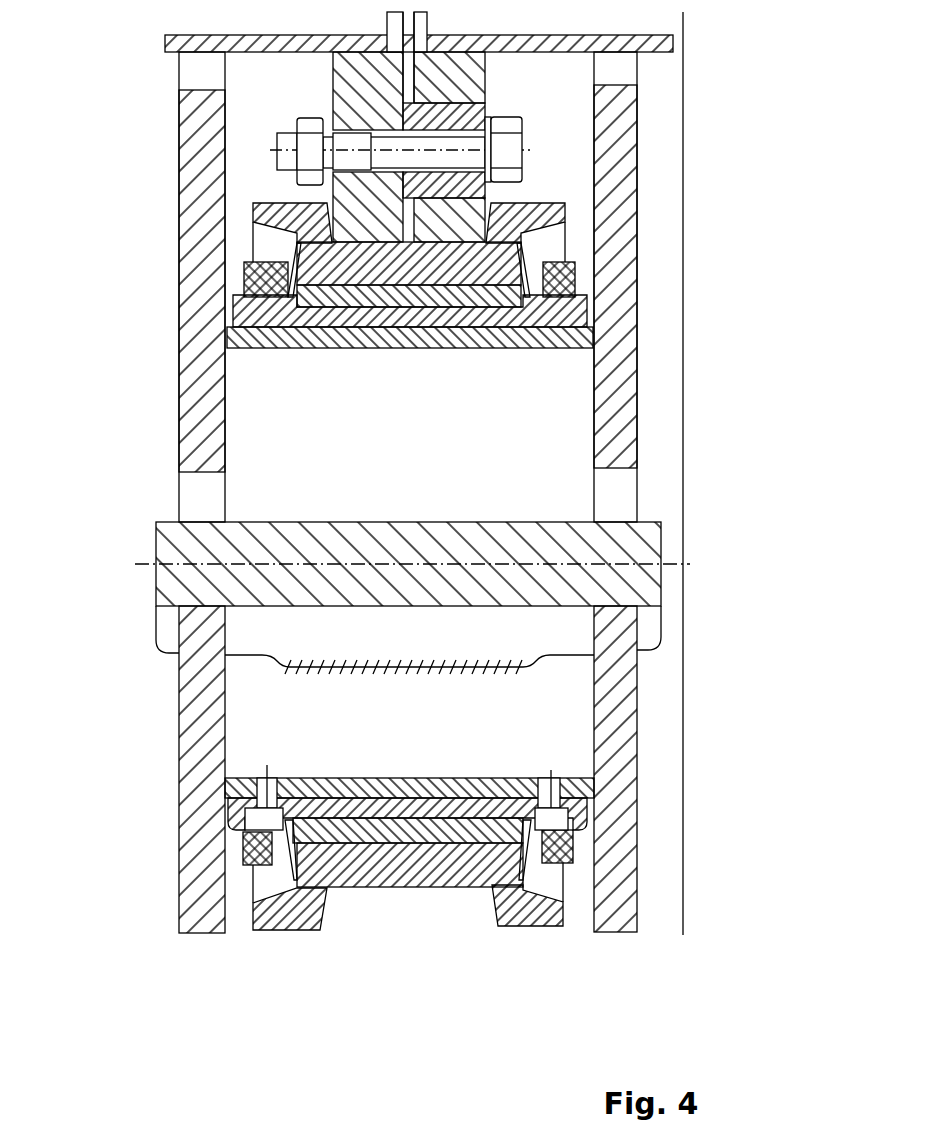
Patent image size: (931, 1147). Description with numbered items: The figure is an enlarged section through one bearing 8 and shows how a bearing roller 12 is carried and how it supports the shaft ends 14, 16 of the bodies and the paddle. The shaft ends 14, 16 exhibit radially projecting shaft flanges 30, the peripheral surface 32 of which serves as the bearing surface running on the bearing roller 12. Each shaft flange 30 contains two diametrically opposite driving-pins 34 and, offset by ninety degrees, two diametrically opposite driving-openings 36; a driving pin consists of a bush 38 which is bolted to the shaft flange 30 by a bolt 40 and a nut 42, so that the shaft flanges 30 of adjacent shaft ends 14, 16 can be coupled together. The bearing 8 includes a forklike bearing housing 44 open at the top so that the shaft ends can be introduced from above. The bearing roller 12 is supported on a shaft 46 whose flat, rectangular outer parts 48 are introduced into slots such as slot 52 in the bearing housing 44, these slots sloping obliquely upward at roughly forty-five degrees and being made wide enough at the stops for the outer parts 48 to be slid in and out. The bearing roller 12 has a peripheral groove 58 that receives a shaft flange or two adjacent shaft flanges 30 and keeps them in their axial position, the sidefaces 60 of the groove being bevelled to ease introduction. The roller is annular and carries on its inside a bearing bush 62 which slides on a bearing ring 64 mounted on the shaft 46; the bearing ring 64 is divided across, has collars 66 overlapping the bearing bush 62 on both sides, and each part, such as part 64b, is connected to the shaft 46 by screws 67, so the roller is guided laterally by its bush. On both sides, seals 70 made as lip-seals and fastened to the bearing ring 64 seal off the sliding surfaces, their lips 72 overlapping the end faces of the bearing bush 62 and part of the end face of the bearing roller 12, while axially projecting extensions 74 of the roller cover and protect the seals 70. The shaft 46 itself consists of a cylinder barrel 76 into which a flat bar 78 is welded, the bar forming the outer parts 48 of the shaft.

The bearing 8 is at (714, 220).
The bearing roller 12 is at (312, 231).
The shaft end 14 is at (168, 44).
The shaft end 16 is at (652, 40).
The shaft flange 30 is at (422, 82).
The peripheral surface 32 is at (285, 313).
The driving-pin 34 is at (629, 146).
The driving-opening 36 is at (485, 80).
The bush 38 is at (588, 142).
The bolt 40 is at (472, 160).
The nut 42 is at (307, 125).
The bearing housing 44 is at (203, 224).
The shaft 46 is at (555, 400).
The outer part 48 is at (643, 543).
The slot 52 is at (620, 485).
The peripheral groove 58 is at (358, 887).
The sideface 60 is at (492, 908).
The bearing bush 62 is at (428, 848).
The bearing ring 64 is at (390, 828).
The part of the bearing ring 64b is at (506, 755).
The collar 66 is at (237, 813).
The screw 67 is at (515, 787).
The seal 70 is at (563, 850).
The lip 72 is at (552, 888).
The axially projecting extension 74 is at (542, 918).
The cylinder barrel 76 is at (555, 335).
The flat bar 78 is at (370, 562).